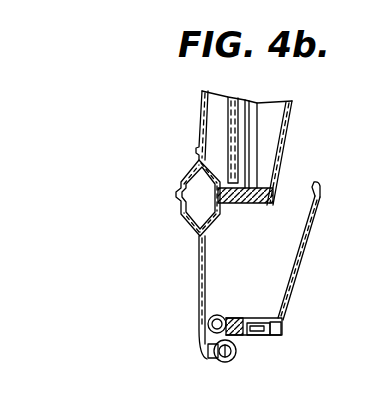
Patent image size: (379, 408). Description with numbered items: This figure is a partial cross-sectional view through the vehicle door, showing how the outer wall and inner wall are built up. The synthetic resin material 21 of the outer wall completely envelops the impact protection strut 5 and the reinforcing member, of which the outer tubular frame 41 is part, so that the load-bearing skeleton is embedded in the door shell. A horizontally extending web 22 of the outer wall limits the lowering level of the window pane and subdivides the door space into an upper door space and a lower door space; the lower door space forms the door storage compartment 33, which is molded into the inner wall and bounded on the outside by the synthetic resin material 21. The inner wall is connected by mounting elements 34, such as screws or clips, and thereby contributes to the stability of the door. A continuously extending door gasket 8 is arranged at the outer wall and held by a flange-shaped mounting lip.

The impact protection strut 5 is at (193, 208).
The door gasket 8 is at (236, 350).
The synthetic resin material 21 is at (199, 270).
The horizontally extending web 22 is at (228, 201).
The door storage compartment 33 is at (288, 240).
The mounting elements 34 is at (281, 327).
The outer tubular frame 41 is at (212, 327).